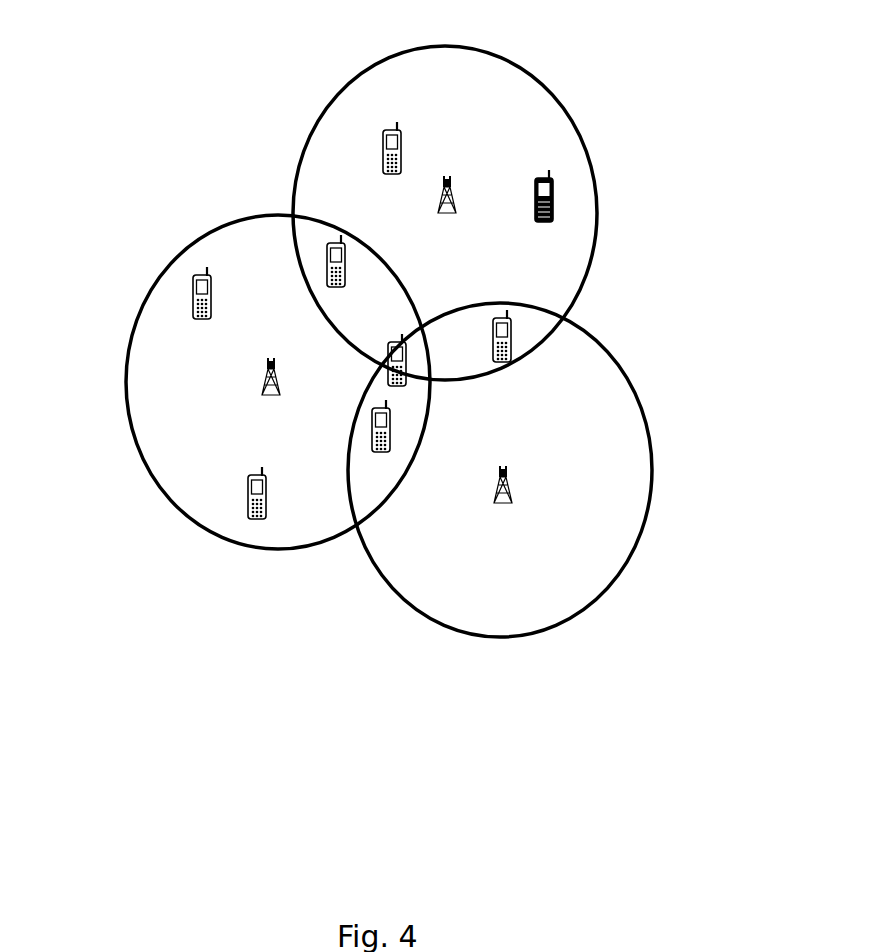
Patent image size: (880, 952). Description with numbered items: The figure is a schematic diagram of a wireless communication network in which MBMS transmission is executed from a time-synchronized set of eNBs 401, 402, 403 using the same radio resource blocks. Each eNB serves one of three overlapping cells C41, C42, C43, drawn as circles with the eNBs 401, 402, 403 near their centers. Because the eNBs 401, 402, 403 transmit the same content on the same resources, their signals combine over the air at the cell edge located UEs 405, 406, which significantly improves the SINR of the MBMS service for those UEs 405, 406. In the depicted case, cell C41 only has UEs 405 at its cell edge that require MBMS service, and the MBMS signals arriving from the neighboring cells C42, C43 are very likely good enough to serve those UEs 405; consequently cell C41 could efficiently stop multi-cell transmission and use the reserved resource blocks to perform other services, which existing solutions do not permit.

The cell C41 is at (638, 392).
The neighboring cell C42 is at (518, 62).
The neighboring cell C43 is at (127, 347).
The eNB 401 is at (263, 393).
The eNB 402 is at (450, 178).
The eNB 403 is at (511, 501).
The cell edge located UE 405 is at (325, 250).
The cell edge located UE 406 is at (382, 136).